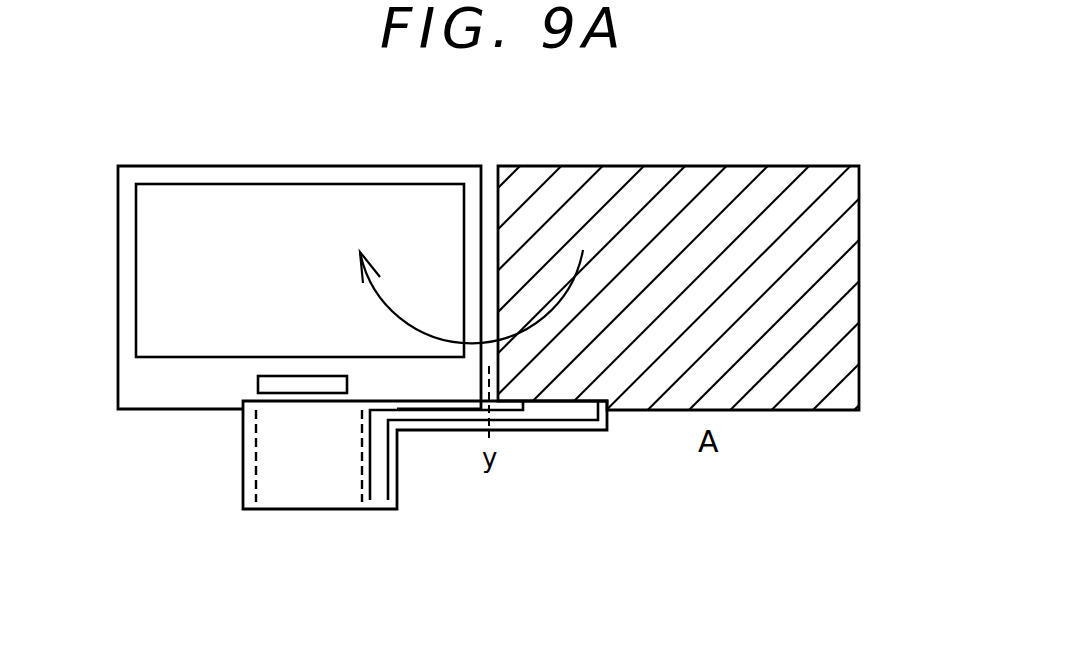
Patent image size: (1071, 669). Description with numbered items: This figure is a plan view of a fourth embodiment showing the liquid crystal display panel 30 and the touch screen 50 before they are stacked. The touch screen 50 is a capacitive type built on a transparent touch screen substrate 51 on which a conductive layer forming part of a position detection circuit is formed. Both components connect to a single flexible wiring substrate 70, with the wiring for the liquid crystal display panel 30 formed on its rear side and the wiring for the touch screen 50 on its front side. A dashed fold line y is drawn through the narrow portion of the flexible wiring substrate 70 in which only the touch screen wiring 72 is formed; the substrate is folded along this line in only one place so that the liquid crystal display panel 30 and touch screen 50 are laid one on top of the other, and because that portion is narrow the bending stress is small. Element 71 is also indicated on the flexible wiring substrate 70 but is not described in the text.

The liquid crystal display panel 30 is at (118, 284).
The touch screen 50 is at (860, 262).
The touch screen substrate 51 is at (300, 383).
The flexible wiring substrate 70 is at (243, 465).
The element inside unit 71 is at (313, 500).
The touch screen wiring 72 is at (380, 478).